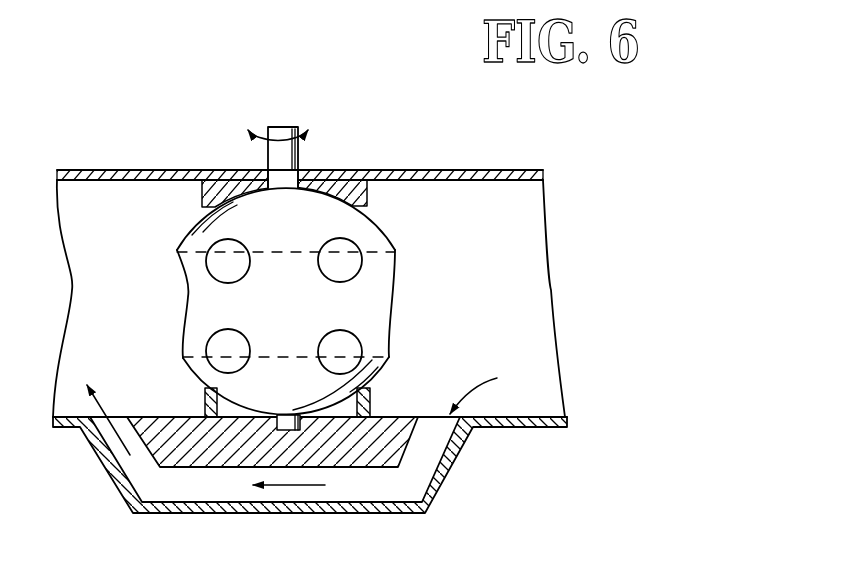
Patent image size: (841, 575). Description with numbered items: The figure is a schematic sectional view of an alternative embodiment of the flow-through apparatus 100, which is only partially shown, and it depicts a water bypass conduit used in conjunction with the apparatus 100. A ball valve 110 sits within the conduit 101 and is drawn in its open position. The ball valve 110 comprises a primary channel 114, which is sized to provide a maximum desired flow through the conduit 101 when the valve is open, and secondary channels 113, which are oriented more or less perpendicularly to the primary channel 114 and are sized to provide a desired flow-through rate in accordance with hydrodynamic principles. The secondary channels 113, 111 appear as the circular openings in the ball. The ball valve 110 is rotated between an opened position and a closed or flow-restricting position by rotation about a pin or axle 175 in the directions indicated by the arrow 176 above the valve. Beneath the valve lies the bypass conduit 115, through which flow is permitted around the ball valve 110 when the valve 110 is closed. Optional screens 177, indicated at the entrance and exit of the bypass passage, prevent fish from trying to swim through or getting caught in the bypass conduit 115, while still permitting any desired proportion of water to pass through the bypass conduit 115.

The apparatus 100 is at (143, 118).
The conduit 101 is at (507, 170).
The ball valve 110 is at (333, 205).
The flow passages 111 is at (356, 336).
The secondary channels 113 is at (228, 240).
The primary channel 114 is at (383, 251).
The bypass conduit 115 is at (430, 462).
The pin or axle 175 is at (290, 127).
The arrow 176 is at (307, 132).
The screens 177 is at (128, 418).